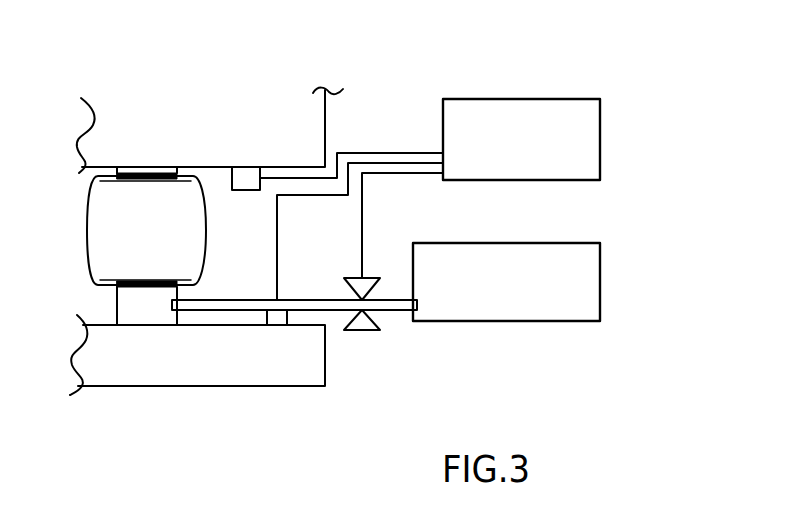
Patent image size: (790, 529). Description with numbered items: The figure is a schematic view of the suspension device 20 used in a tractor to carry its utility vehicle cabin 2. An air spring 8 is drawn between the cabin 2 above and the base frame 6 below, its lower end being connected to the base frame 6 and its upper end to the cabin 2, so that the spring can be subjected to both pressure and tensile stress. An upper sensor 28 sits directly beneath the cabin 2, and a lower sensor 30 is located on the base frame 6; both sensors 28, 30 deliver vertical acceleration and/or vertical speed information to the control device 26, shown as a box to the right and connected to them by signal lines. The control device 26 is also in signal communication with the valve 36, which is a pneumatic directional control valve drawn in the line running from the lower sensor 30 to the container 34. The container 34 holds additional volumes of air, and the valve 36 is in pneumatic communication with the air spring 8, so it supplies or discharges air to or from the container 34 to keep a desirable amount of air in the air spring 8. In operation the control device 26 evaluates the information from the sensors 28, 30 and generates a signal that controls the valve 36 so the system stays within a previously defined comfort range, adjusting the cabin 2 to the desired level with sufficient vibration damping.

The suspension device 20 is at (444, 43).
The utility vehicle cabin 2 is at (220, 167).
The upper sensor 28 is at (242, 177).
The control device 26 is at (600, 137).
The container 34 is at (600, 282).
The air spring 8 is at (117, 235).
The base frame 6 is at (187, 386).
The lower sensor 30 is at (278, 315).
The valve 36 is at (365, 331).